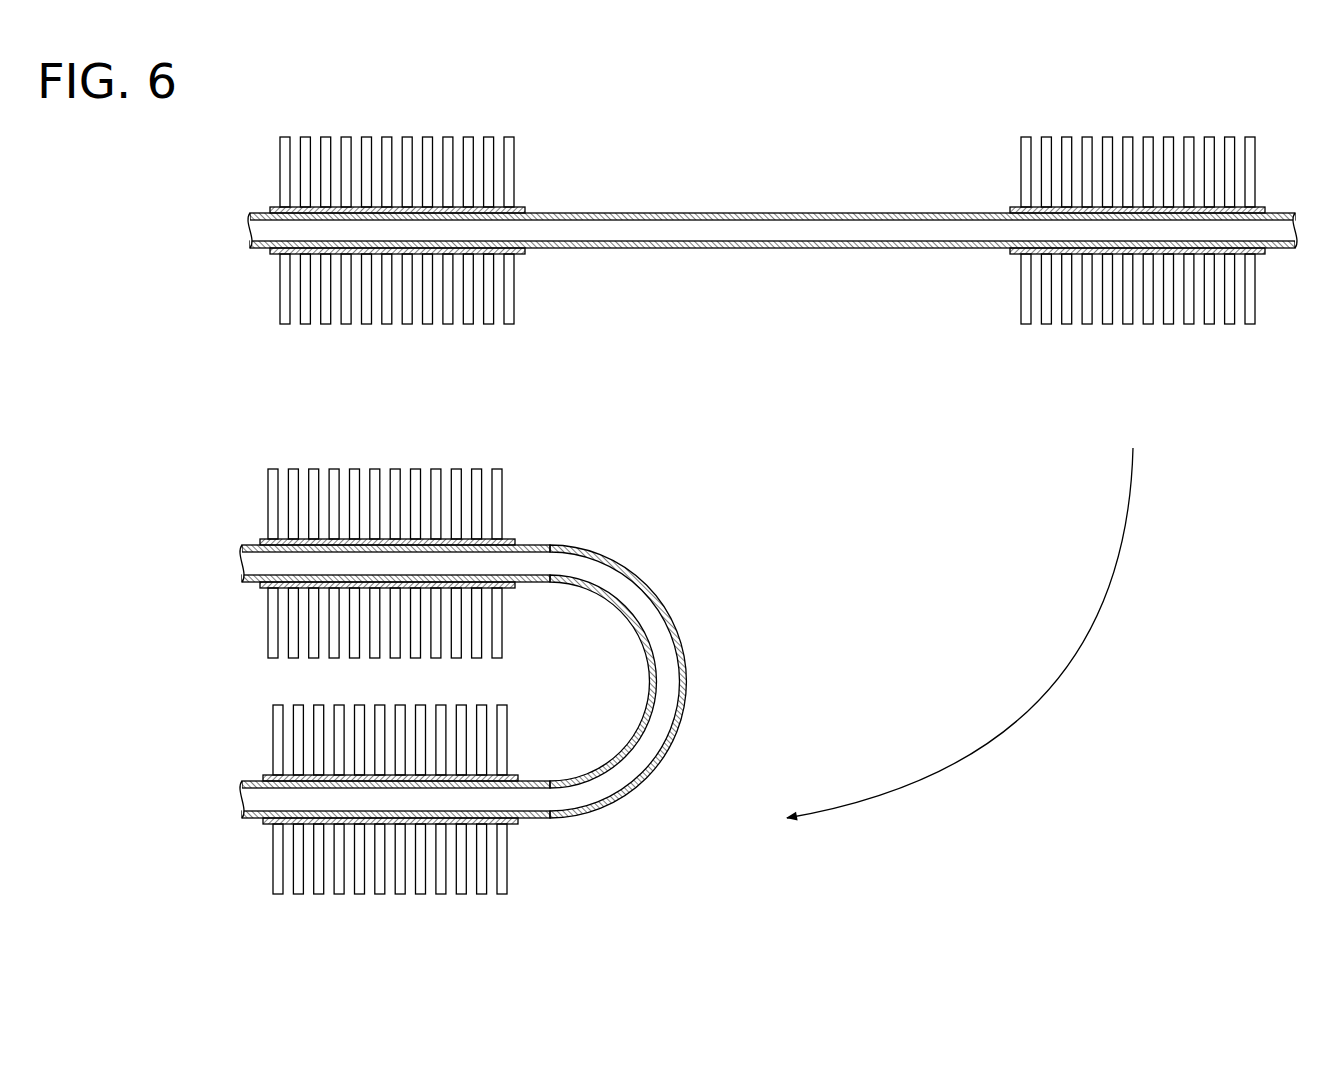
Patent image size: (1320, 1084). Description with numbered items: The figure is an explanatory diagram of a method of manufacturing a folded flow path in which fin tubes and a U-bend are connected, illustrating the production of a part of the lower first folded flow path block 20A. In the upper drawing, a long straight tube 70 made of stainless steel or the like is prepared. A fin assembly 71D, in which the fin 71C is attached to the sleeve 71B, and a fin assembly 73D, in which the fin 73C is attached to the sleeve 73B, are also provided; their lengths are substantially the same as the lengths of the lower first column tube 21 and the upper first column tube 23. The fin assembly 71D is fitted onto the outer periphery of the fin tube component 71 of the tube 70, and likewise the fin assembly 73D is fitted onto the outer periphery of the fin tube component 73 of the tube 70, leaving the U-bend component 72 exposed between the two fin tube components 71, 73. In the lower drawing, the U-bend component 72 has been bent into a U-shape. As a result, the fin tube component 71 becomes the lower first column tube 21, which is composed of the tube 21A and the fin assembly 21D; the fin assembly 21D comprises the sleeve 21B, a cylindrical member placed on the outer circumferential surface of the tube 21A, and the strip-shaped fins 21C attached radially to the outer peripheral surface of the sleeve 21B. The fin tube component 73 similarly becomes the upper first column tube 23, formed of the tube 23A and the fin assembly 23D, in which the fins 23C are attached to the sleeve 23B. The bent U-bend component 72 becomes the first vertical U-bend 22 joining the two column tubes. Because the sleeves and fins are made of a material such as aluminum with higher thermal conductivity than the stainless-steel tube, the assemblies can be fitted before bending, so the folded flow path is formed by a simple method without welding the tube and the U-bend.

The tube 70 is at (704, 231).
The fin tube component 71 is at (453, 203).
The sleeve 71B is at (523, 205).
The fin 71C is at (515, 153).
The fin assembly 71D is at (486, 147).
The U-bend component 72 is at (813, 212).
The fin tube component 73 is at (1051, 258).
The sleeve 73B is at (1010, 257).
The fin 73C is at (1017, 323).
The fin assembly 73D is at (1051, 314).
The lower first folded flow path block 20A is at (439, 675).
The lower first column tube 21 is at (416, 558).
The tube 21A is at (530, 544).
The sleeve 21B is at (505, 539).
The fin 21C is at (502, 470).
The fin assembly 21D is at (481, 558).
The first vertical U-bend 22 is at (683, 642).
The upper first column tube 23 is at (411, 821).
The tube 23A is at (533, 819).
The sleeve 23B is at (513, 826).
The fin 23C is at (510, 865).
The fin assembly 23D is at (480, 878).